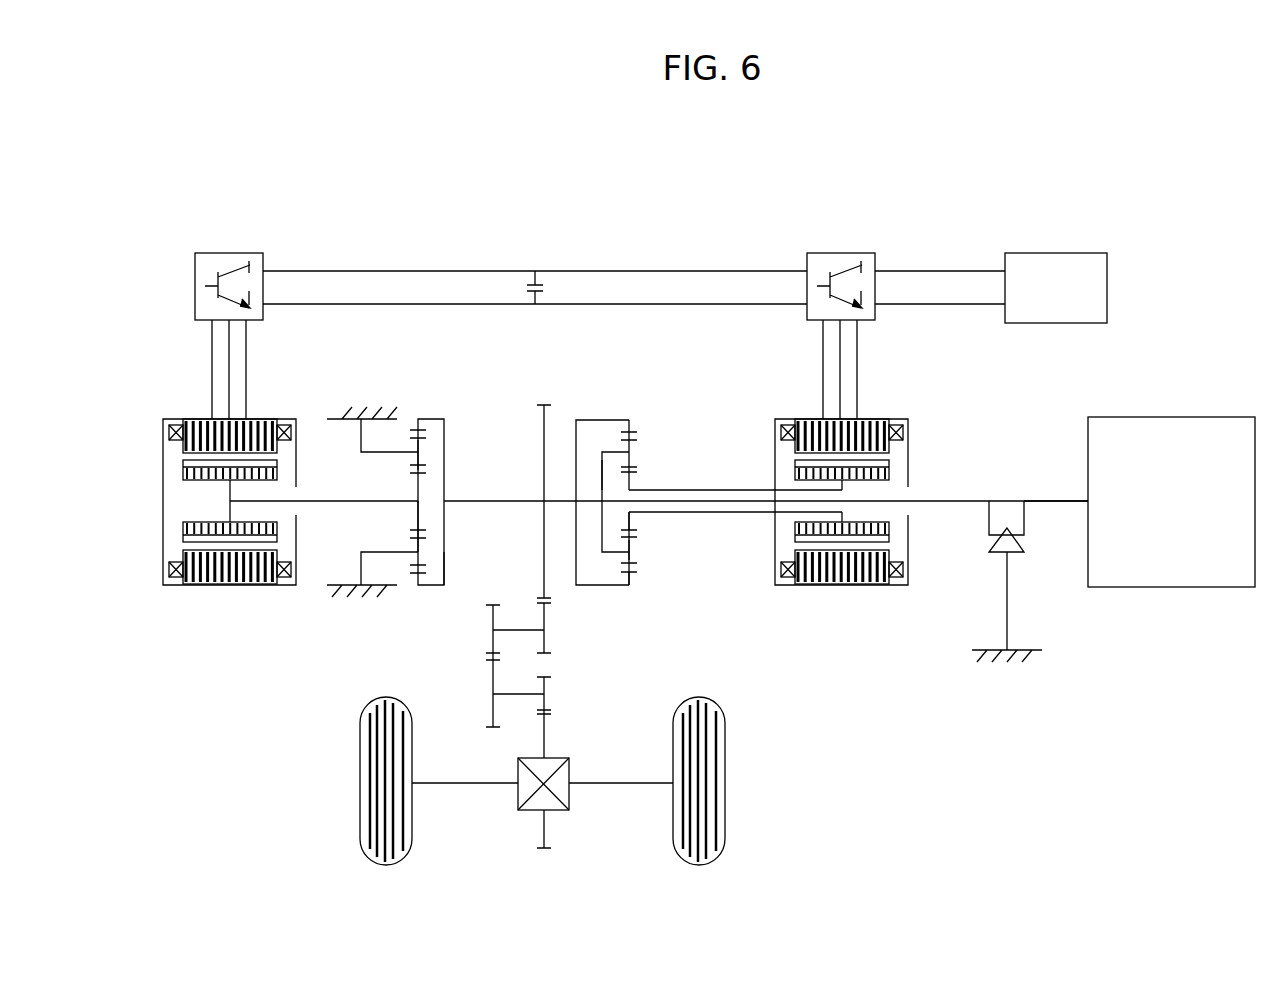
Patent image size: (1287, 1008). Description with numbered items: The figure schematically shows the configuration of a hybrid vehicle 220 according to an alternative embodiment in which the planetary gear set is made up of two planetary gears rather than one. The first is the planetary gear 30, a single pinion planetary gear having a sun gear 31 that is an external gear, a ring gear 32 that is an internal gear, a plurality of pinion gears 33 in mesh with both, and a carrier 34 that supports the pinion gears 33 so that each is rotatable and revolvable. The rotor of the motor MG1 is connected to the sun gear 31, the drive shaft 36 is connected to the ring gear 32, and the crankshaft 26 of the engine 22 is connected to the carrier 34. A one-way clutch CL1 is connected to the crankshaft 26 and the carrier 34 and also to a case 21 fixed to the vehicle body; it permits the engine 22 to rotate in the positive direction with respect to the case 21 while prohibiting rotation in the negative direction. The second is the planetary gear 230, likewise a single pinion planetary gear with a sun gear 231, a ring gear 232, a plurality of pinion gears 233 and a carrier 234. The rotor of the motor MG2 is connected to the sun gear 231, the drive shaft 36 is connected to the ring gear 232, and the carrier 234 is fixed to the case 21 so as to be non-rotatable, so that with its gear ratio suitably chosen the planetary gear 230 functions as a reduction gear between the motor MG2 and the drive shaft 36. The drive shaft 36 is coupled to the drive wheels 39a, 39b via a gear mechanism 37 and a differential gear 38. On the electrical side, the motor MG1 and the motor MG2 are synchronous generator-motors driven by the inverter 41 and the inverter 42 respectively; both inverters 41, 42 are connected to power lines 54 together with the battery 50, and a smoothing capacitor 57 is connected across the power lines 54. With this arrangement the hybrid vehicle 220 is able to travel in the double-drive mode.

The hybrid vehicle 220 is at (919, 167).
The inverter 42 is at (232, 253).
The inverter 41 is at (839, 253).
The power lines 54 is at (636, 302).
The smoothing capacitor 57 is at (538, 283).
The battery 50 is at (1048, 253).
The motor MG2 is at (240, 585).
The motor MG1 is at (824, 585).
The drive shaft 36 is at (500, 501).
The planetary gear 230 is at (419, 396).
The sun gear 231 is at (420, 522).
The ring gear 232 is at (422, 578).
The pinion gears 233 is at (425, 549).
The carrier 234 is at (403, 553).
The planetary gear 30 is at (629, 396).
The sun gear 31 is at (631, 520).
The ring gear 32 is at (631, 580).
The pinion gears 33 is at (631, 548).
The carrier 34 is at (604, 492).
The gear mechanism 37 is at (558, 644).
The differential gear 38 is at (518, 776).
The drive wheel 39a is at (360, 783).
The drive wheel 39b is at (725, 783).
The engine 22 is at (1172, 417).
The crankshaft 26 is at (1040, 501).
The one-way clutch CL1 is at (1016, 556).
The case 21 is at (1027, 650).